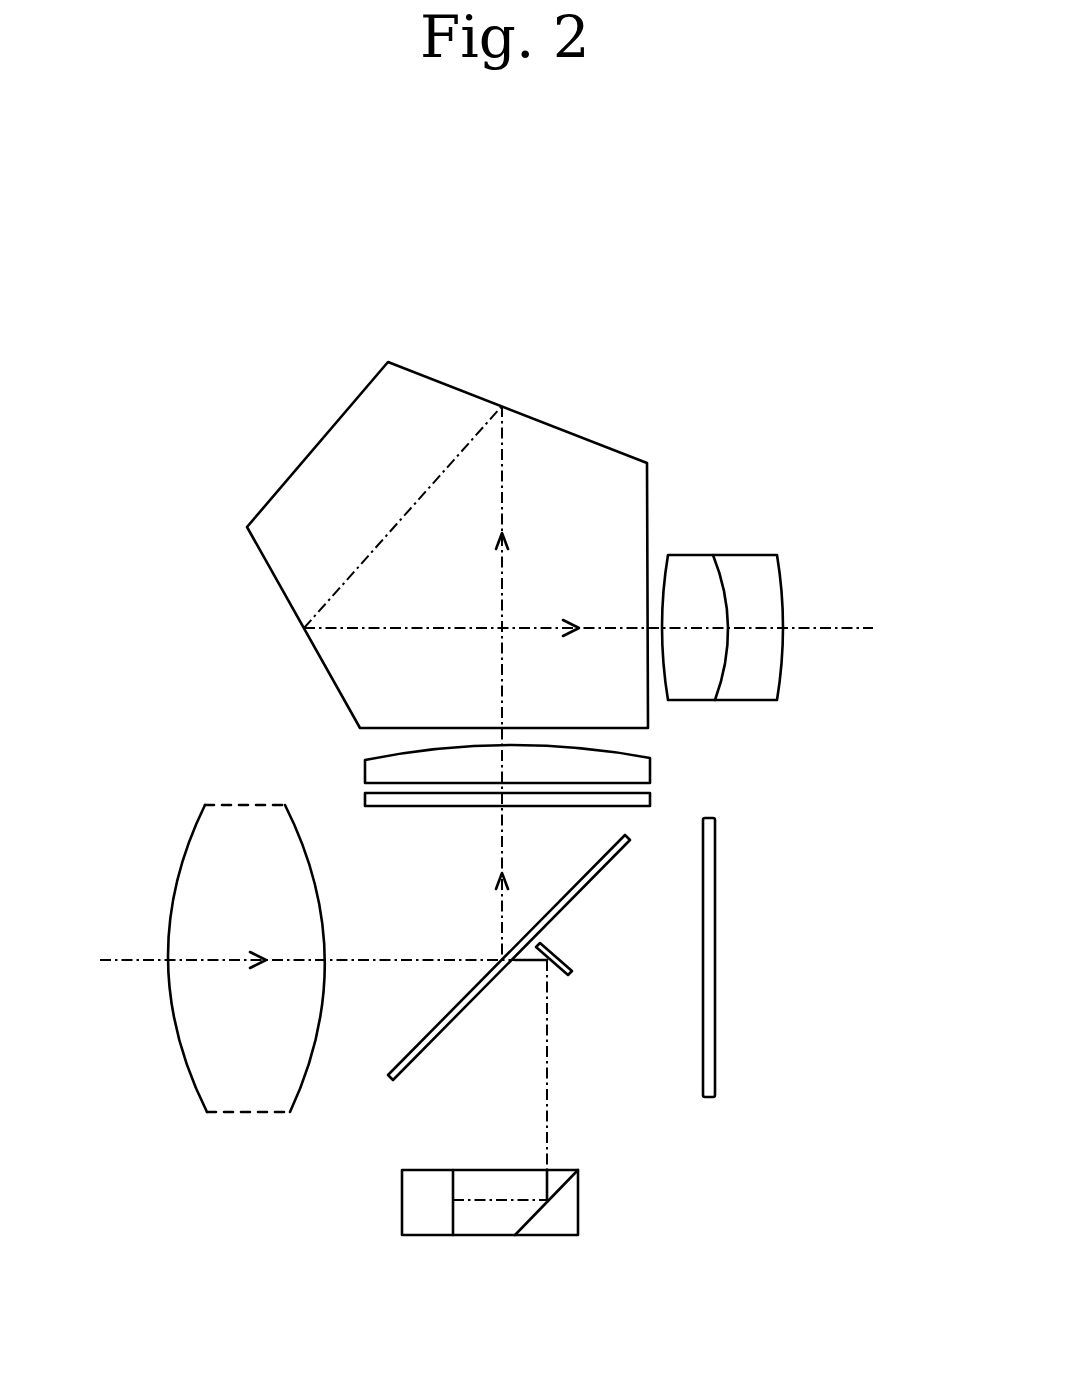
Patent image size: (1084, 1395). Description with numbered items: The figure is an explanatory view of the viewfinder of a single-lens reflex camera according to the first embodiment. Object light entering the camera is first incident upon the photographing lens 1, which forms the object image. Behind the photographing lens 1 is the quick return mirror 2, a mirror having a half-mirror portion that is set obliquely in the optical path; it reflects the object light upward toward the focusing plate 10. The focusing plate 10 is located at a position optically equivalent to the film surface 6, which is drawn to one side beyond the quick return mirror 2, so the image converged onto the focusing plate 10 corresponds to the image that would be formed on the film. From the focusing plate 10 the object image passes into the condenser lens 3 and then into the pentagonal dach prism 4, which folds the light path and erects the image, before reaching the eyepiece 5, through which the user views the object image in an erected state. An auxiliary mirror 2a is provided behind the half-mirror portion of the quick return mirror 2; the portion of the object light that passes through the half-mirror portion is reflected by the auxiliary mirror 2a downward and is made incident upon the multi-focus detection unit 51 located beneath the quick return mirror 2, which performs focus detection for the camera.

The photographing lens 1 is at (243, 817).
The quick return mirror 2 is at (468, 1000).
The auxiliary mirror 2a is at (557, 948).
The condenser lens 3 is at (632, 772).
The pentagonal dach prism 4 is at (565, 453).
The eyepiece 5 is at (702, 557).
The film surface 6 is at (712, 983).
The focusing plate 10 is at (412, 798).
The multi-focus detection unit 51 is at (547, 1222).